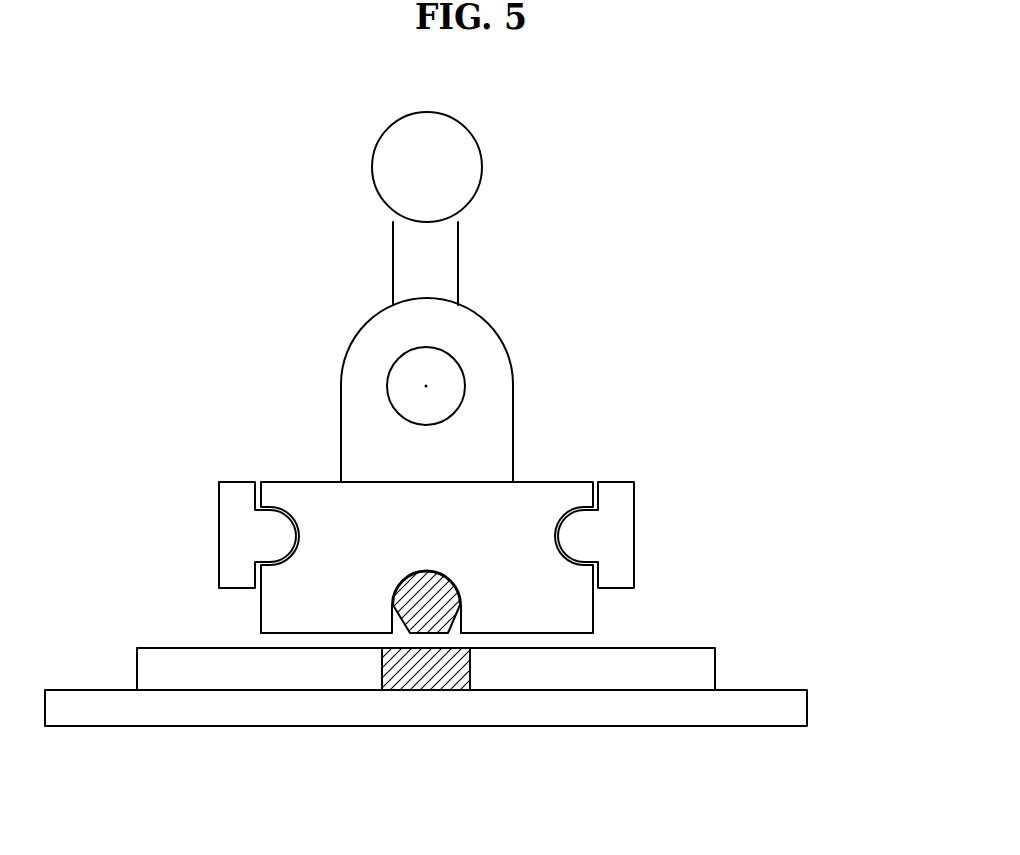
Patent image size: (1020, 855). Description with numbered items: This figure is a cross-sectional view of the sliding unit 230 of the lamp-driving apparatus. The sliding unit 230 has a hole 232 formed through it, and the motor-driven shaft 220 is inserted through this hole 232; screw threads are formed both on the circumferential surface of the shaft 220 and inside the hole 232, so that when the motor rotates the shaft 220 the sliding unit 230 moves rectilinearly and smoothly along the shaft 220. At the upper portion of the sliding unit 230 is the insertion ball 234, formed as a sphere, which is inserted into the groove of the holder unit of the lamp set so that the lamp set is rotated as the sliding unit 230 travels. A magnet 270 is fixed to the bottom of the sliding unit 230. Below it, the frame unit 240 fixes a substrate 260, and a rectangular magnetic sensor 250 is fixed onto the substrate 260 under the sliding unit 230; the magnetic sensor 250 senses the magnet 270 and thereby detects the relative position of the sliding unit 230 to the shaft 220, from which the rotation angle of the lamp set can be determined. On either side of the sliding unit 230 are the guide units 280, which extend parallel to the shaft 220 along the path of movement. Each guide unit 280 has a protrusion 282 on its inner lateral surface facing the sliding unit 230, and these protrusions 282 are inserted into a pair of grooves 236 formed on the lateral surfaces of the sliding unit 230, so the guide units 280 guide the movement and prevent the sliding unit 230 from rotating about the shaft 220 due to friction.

The shaft 220 is at (427, 385).
The sliding unit 230 is at (362, 380).
The hole 232 is at (447, 347).
The insertion ball 234 is at (454, 170).
The grooves 236 is at (292, 518).
The frame unit 240 is at (788, 712).
The magnetic sensor 250 is at (413, 673).
The substrate 260 is at (210, 675).
The magnet 270 is at (427, 607).
The guide units 280 is at (617, 535).
The protrusion 282 is at (277, 542).